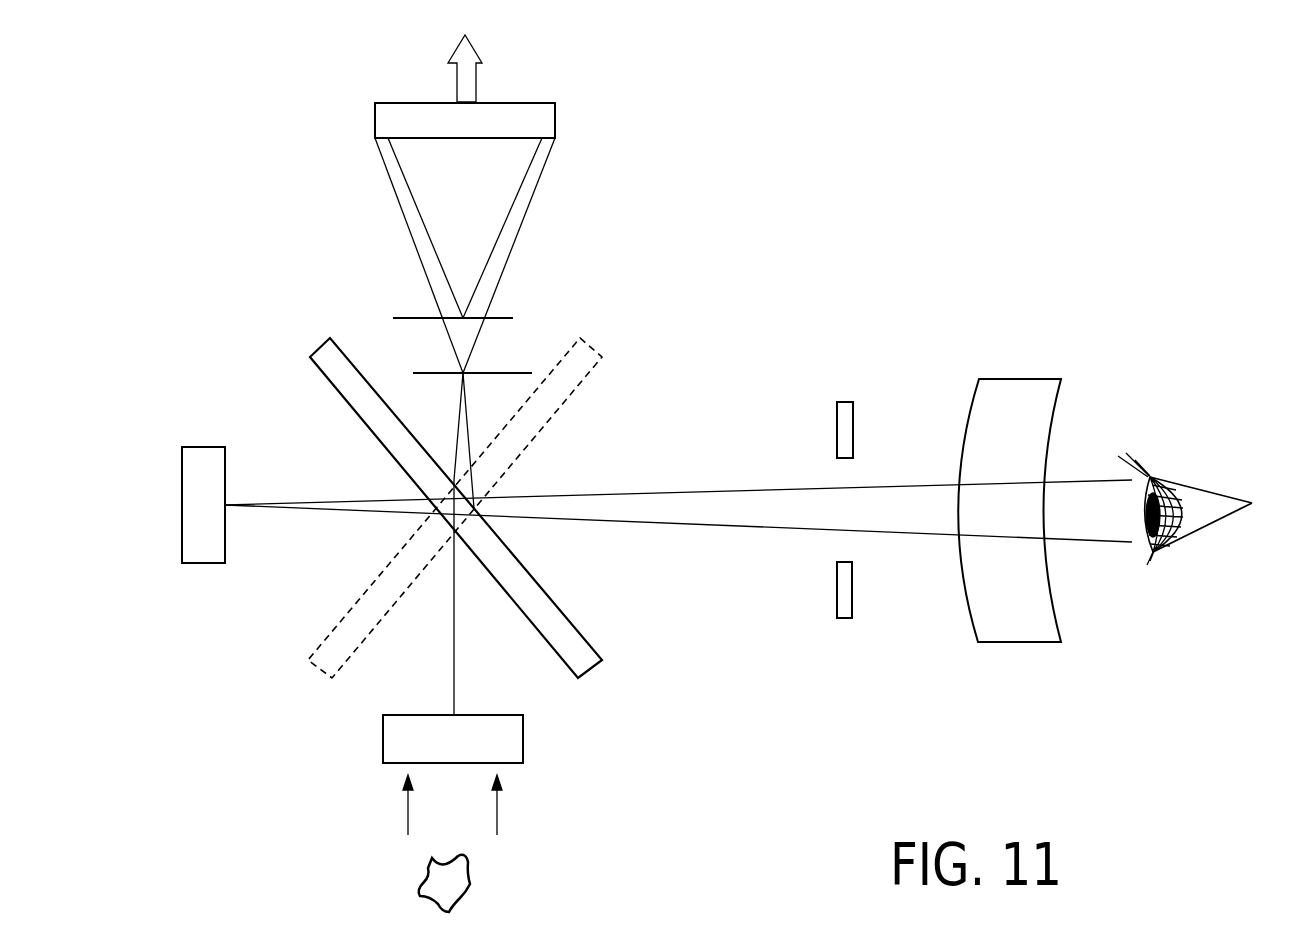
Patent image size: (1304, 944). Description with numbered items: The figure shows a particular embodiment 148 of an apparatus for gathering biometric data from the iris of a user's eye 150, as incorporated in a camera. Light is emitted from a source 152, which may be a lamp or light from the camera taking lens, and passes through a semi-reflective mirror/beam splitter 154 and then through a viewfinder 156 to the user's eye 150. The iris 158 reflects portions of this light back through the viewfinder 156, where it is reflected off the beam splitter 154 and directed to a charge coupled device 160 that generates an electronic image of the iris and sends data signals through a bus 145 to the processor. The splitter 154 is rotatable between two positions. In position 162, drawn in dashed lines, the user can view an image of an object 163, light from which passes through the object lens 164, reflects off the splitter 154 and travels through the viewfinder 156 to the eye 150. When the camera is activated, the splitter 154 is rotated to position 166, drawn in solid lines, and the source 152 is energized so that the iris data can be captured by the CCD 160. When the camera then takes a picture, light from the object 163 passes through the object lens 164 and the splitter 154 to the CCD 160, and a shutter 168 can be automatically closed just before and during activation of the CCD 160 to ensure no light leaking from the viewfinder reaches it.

The bus 145 is at (476, 80).
The embodiment of biometric measurement apparatus 148 is at (764, 240).
The user's eye 150 is at (1108, 494).
The light source 152 is at (200, 563).
The semi-reflective mirror/beam splitter 154 is at (317, 343).
The viewfinder 156 is at (1012, 379).
The iris 158 is at (1147, 520).
The charge coupled device (CCD) 160 is at (556, 120).
The first position of beam splitter 162 is at (555, 335).
The object 163 is at (470, 882).
The object lens 164 is at (523, 740).
The second position of beam splitter 166 is at (357, 335).
The shutter 168 is at (845, 375).